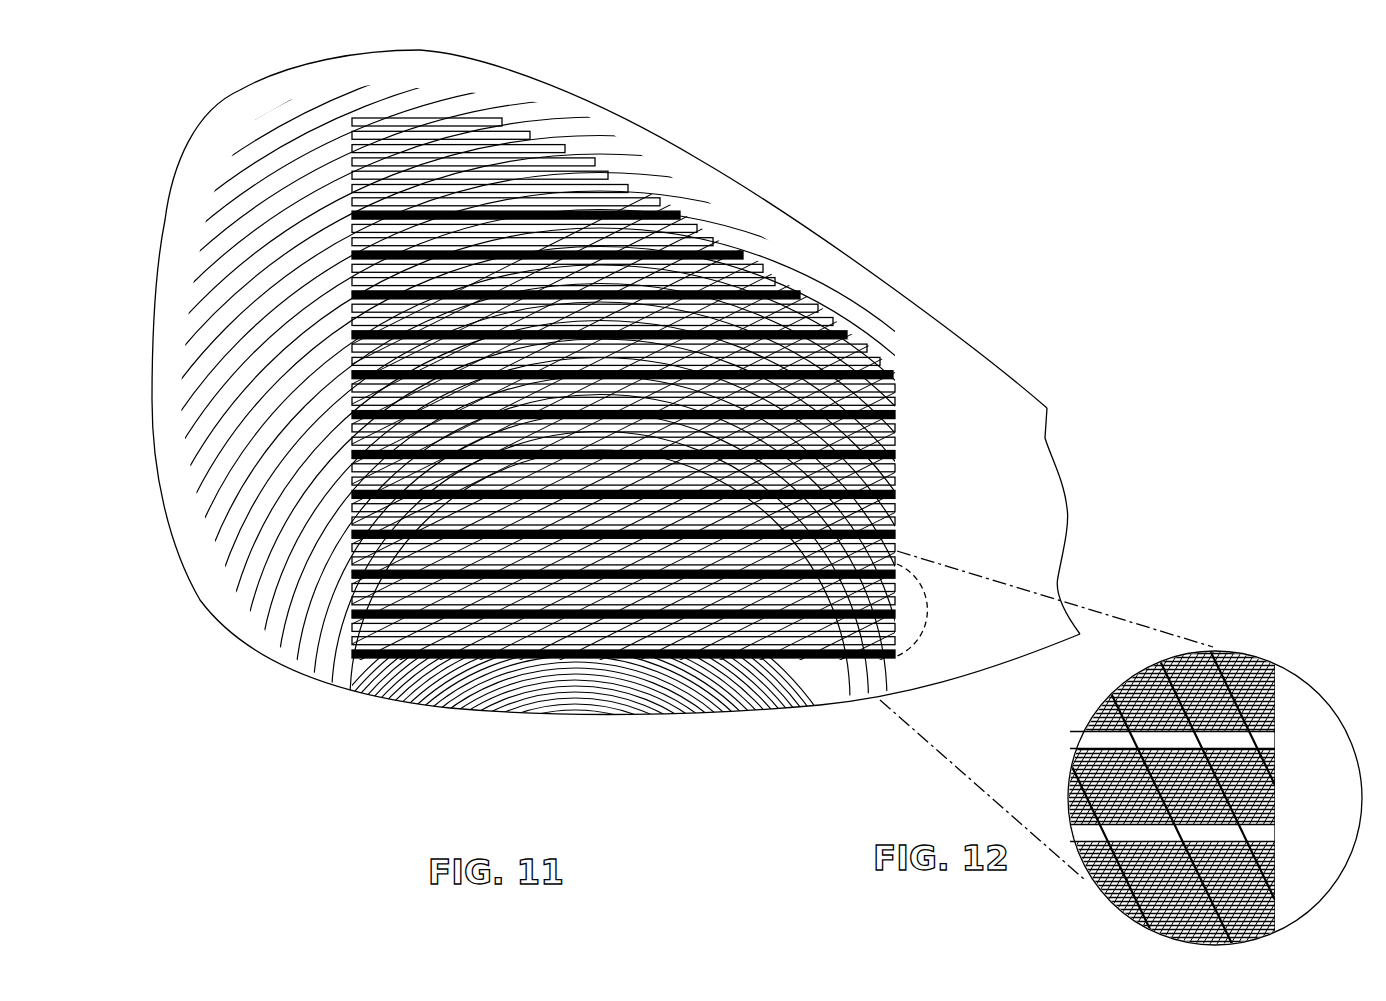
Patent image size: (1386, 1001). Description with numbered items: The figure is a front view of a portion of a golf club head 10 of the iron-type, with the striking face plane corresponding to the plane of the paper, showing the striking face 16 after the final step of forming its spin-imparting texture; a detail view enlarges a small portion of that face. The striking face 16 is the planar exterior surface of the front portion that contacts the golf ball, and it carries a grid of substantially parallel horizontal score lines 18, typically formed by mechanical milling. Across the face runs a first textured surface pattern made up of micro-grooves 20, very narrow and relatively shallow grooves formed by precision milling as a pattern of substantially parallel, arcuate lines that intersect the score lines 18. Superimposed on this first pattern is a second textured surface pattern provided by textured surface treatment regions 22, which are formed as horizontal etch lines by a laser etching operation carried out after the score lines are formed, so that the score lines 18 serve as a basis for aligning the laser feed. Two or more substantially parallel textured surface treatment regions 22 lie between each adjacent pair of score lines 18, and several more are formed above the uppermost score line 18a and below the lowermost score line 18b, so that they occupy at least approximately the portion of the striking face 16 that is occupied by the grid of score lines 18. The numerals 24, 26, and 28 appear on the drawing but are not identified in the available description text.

In FIG. 11, the golf club head 10 is at (693, 513).
In FIG. 11, the striking face 16 is at (643, 156).
In FIG. 11, the score lines 18 is at (672, 385).
In FIG. 12, the score lines 18 is at (1273, 767).
In FIG. 11, the uppermost score line 18a is at (628, 172).
In FIG. 11, the lowermost score line 18b is at (897, 621).
In FIG. 12, the lowermost score line 18b is at (1262, 835).
In FIG. 11, the micro-grooves 20 is at (712, 200).
In FIG. 12, the micro-grooves 20 is at (1150, 893).
In FIG. 11, the textured surface treatment regions 22 is at (870, 336).
In FIG. 12, the textured surface treatment regions 22 is at (1270, 700).
In FIG. 11, the toe 24 is at (196, 597).
In FIG. 11, the crown edge 26 is at (606, 90).
In FIG. 11, the sole 28 is at (738, 726).